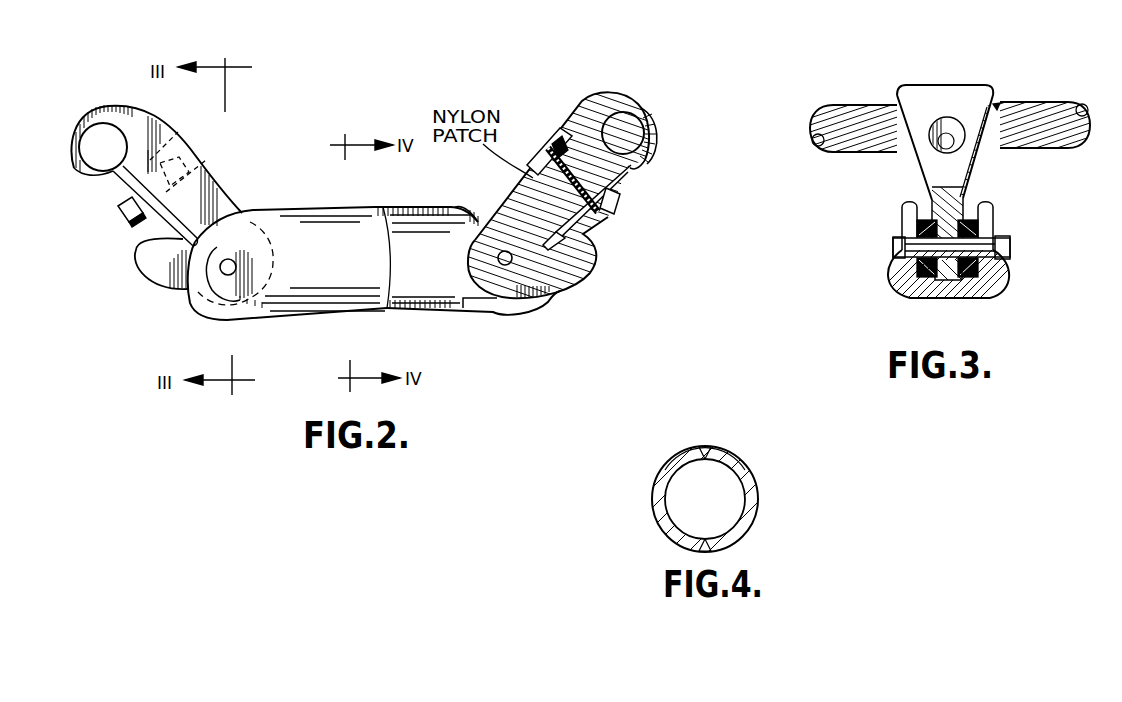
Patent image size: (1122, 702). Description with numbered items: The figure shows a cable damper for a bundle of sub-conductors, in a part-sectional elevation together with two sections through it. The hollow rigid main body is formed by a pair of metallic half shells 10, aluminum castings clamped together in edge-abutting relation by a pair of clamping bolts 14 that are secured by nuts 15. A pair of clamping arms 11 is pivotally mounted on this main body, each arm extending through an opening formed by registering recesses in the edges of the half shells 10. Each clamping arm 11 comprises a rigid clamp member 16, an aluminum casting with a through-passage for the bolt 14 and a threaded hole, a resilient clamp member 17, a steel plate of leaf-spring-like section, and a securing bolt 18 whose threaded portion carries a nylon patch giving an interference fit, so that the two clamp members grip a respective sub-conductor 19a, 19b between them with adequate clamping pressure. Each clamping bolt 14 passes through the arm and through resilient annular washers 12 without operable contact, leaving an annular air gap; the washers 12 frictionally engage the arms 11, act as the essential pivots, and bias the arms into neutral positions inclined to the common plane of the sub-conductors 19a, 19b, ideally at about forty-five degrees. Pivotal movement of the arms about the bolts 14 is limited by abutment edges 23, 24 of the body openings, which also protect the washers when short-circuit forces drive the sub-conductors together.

In FIG. 2, the half shells 10 is at (323, 297).
In FIG. 3, the half shells 10 is at (890, 293).
In FIG. 4, the half shells 10 is at (657, 485).
In FIG. 2, the clamping arms 11 is at (99, 187).
In FIG. 3, the clamping arms 11 is at (987, 167).
In FIG. 3, the annular washers 12 is at (898, 222).
In FIG. 3, the clamping bolts 14 is at (897, 253).
In FIG. 3, the nuts 15 is at (1004, 237).
In FIG. 2, the rigid clamp member 16 is at (577, 117).
In FIG. 2, the resilient clamp member 17 is at (622, 172).
In FIG. 2, the securing bolt 18 is at (615, 212).
In FIG. 2, the sub-conductor 19a is at (92, 128).
In FIG. 3, the sub-conductor 19a is at (845, 108).
In FIG. 2, the sub-conductor 19b is at (637, 133).
In FIG. 2, the abutment edge 23 is at (484, 205).
In FIG. 2, the abutment edge 24 is at (556, 290).